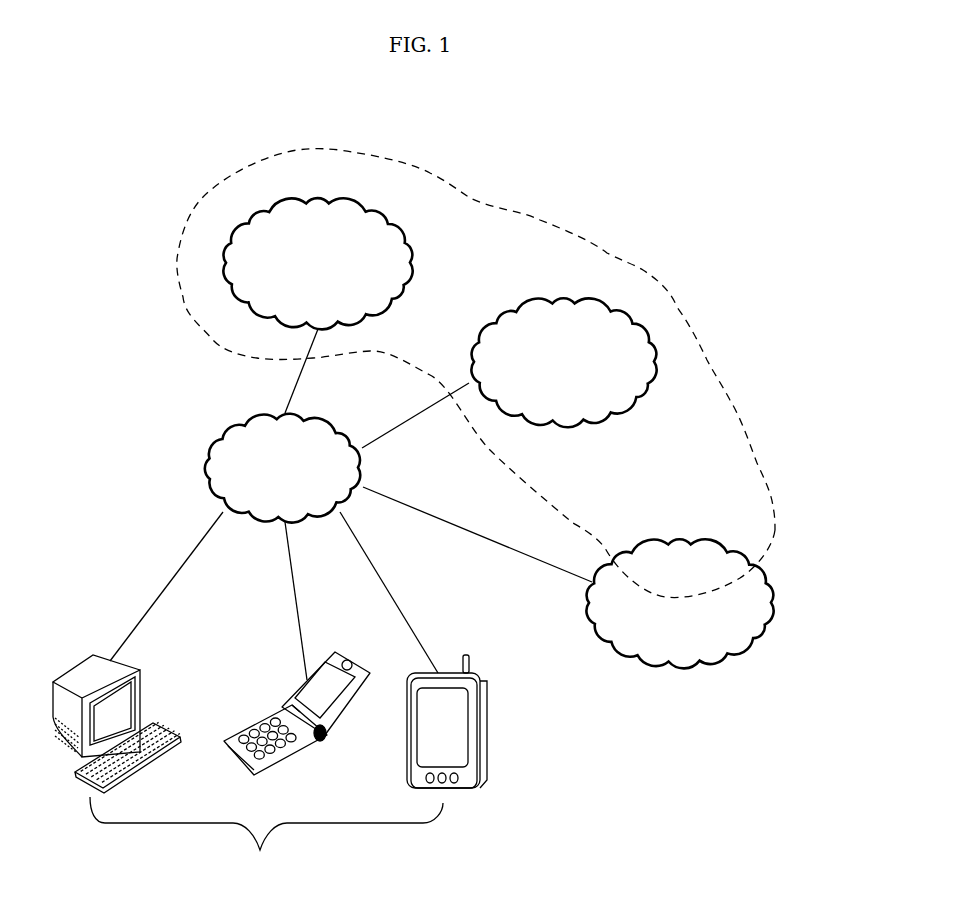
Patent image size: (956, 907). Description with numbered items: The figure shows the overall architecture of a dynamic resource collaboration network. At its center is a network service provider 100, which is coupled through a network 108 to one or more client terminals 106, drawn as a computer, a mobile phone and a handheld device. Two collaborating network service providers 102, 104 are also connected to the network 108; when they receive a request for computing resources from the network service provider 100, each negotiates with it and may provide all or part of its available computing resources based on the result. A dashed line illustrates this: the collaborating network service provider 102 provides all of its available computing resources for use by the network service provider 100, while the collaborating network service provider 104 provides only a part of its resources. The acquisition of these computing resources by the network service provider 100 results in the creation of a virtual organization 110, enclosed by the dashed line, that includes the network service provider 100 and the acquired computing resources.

The network service provider 100 is at (348, 198).
The collaborating network service provider 102 is at (605, 300).
The collaborating network service provider 104 is at (680, 670).
The client terminals 106 is at (270, 764).
The network 108 is at (203, 455).
The virtual organization 110 is at (730, 405).